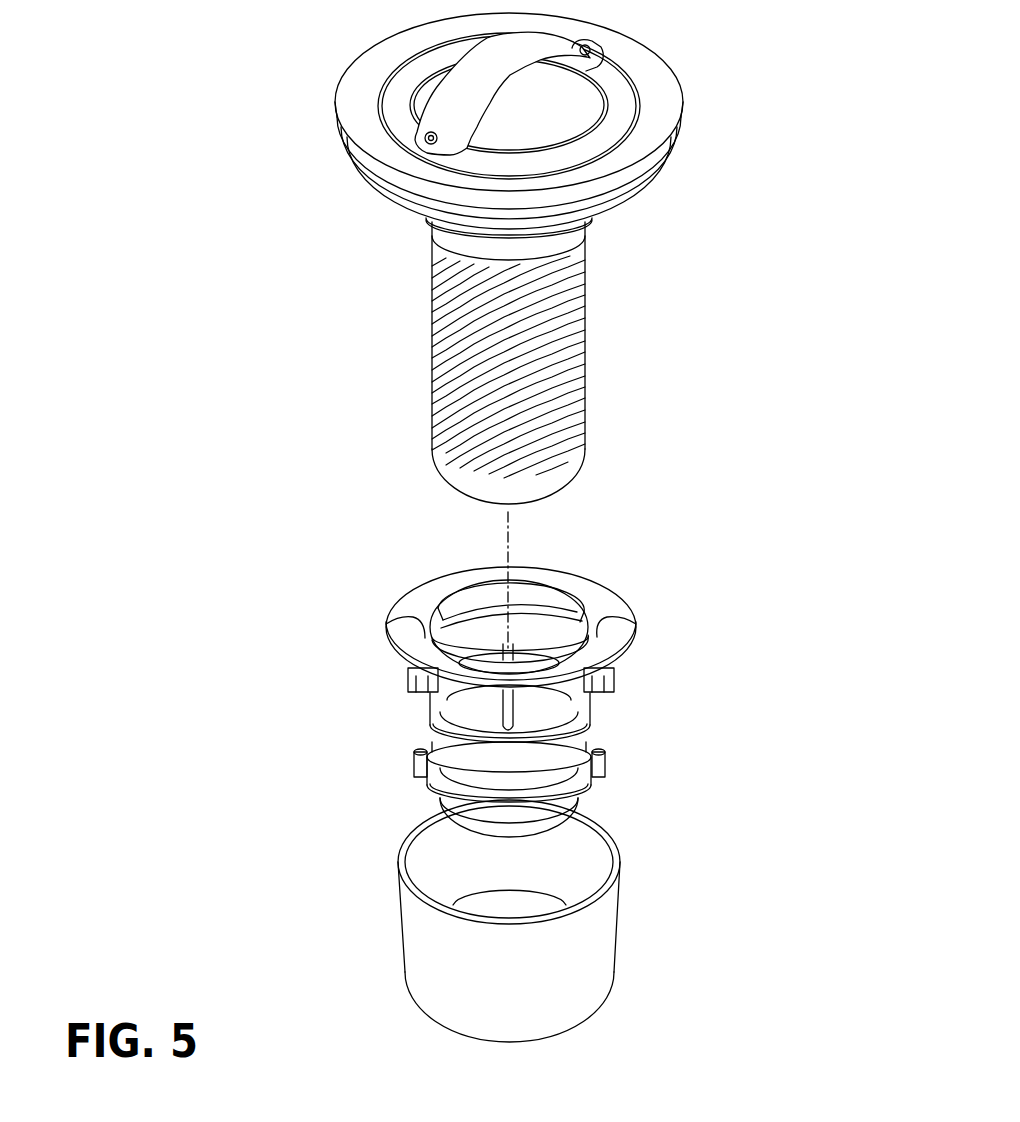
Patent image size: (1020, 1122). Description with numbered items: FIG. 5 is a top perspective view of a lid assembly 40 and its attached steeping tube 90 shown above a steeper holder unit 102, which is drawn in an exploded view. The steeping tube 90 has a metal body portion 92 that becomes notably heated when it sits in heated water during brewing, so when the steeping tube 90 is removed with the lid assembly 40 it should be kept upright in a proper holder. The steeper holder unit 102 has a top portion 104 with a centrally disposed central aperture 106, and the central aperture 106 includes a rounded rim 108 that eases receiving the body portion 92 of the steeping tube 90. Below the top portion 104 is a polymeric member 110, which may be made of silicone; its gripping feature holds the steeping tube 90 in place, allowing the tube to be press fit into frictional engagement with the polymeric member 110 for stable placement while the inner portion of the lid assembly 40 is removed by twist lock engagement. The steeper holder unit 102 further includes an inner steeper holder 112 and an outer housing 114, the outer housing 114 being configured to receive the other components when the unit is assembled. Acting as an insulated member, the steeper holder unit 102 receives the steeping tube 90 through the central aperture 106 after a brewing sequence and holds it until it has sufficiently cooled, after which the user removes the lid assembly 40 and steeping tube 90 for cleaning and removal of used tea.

The lid assembly 40 is at (262, 162).
The steeping tube 90 is at (613, 290).
The body portion 92 is at (586, 368).
The steeper holder unit 102 is at (372, 585).
The top portion 104 is at (617, 611).
The central aperture 106 is at (636, 630).
The rounded rim 108 is at (386, 624).
The polymeric member 110 is at (590, 733).
The inner steeper holder 112 is at (592, 795).
The outer housing 114 is at (600, 922).